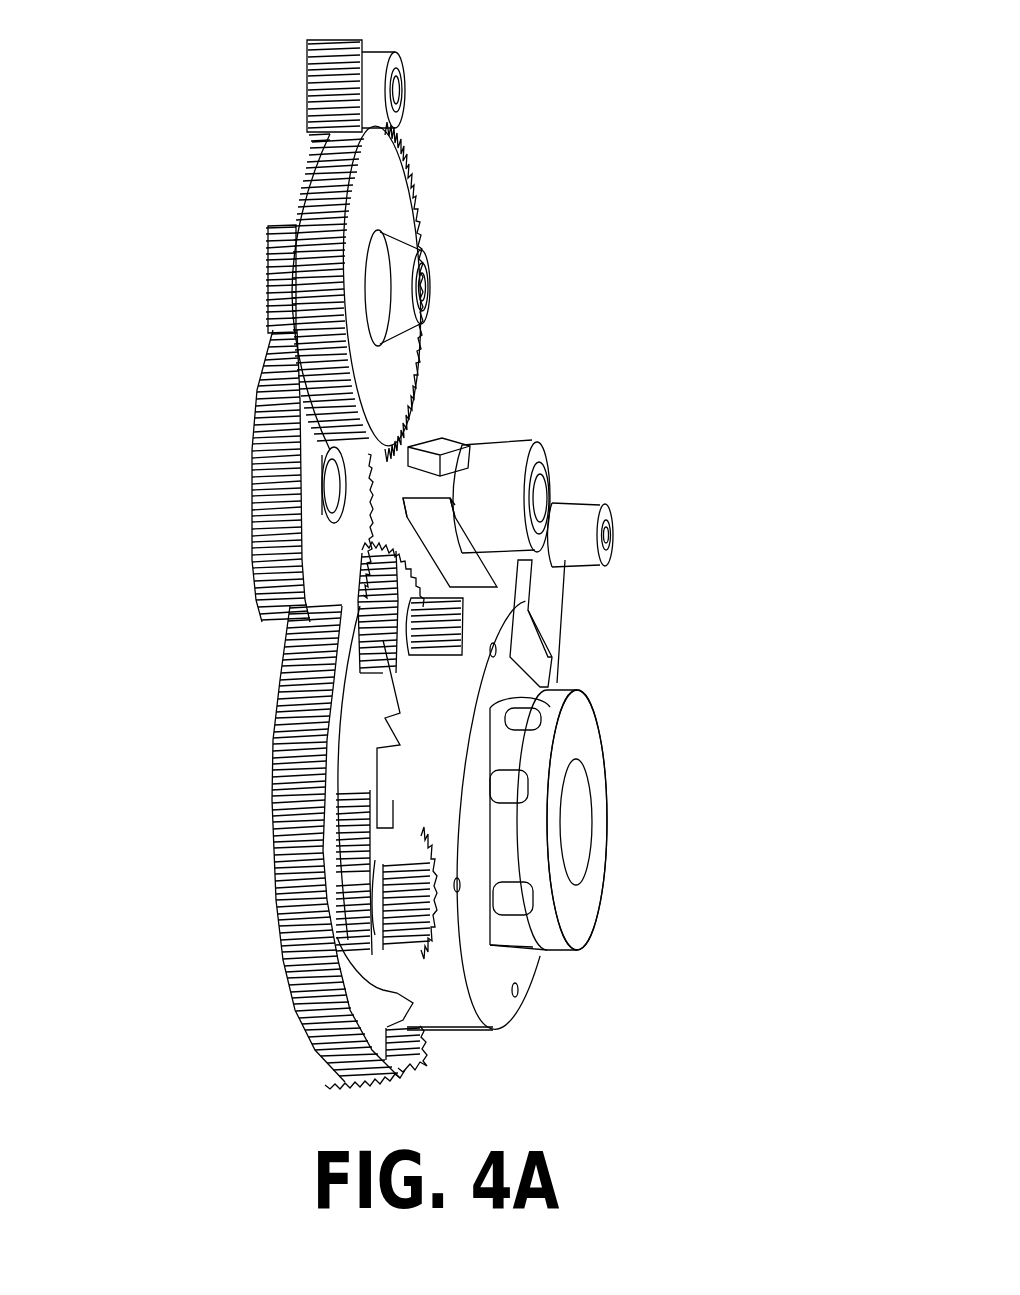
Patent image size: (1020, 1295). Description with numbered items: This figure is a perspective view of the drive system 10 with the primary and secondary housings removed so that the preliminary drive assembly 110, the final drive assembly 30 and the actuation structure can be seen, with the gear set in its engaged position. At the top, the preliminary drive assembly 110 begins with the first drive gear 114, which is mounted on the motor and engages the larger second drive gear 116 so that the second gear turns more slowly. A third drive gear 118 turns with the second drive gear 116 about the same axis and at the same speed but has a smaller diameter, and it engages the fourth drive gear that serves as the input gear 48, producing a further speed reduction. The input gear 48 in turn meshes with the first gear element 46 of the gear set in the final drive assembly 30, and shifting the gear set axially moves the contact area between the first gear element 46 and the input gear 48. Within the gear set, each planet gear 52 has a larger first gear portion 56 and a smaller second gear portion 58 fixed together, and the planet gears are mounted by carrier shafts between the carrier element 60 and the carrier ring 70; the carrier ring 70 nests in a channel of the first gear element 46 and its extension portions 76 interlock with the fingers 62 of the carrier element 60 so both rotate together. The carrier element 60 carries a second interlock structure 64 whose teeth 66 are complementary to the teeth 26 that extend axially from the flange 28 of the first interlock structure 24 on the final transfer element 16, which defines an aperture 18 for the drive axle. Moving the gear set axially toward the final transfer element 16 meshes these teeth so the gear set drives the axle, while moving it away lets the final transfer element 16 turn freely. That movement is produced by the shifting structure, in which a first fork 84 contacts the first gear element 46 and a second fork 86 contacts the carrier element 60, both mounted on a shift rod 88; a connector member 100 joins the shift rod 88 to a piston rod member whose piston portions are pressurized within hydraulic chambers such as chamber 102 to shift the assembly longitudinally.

The drive system 10 is at (517, 330).
The final transfer element 16 is at (600, 886).
The aperture 18 is at (572, 838).
The first interlock structure 24 is at (532, 823).
The teeth 26 is at (510, 900).
The flange 28 is at (550, 932).
The final drive assembly 30 is at (230, 640).
The first gear element 46 is at (282, 713).
The input gear 48 is at (268, 460).
The planet gear 52 is at (393, 900).
The first gear portion 56 is at (335, 868).
The second gear portion 58 is at (400, 897).
The carrier element 60 is at (450, 712).
The fingers 62 is at (407, 703).
The second interlock structure 64 is at (487, 753).
The teeth 66 is at (488, 787).
The carrier ring 70 is at (348, 768).
The extension portions 76 is at (360, 698).
The first fork 84 is at (333, 698).
The second fork 86 is at (535, 598).
The shift rod 88 is at (580, 540).
The connector member 100 is at (432, 452).
The hydraulic chamber 102 is at (510, 508).
The preliminary drive assembly 110 is at (487, 212).
The first drive gear 114 is at (332, 88).
The second drive gear 116 is at (303, 190).
The third drive gear 118 is at (268, 257).